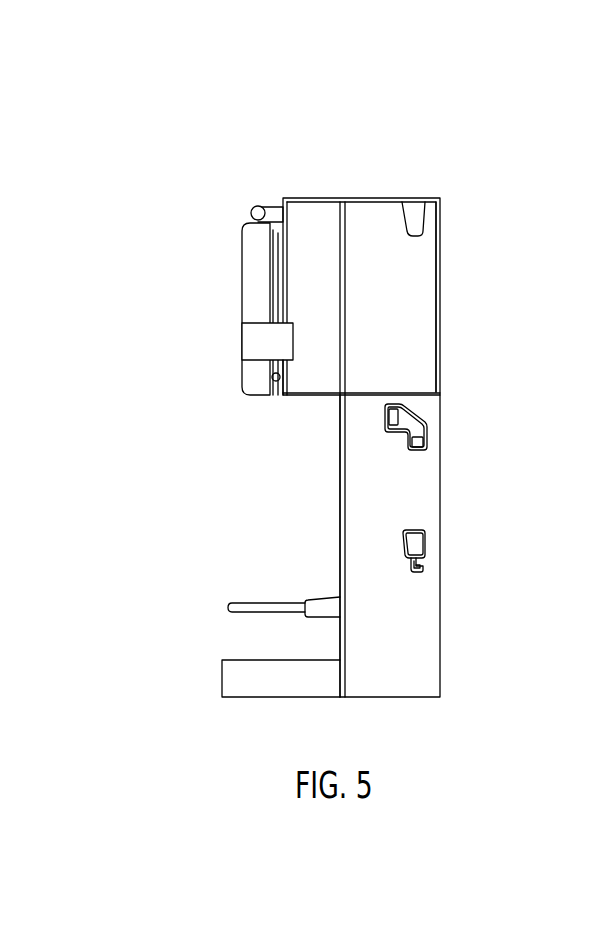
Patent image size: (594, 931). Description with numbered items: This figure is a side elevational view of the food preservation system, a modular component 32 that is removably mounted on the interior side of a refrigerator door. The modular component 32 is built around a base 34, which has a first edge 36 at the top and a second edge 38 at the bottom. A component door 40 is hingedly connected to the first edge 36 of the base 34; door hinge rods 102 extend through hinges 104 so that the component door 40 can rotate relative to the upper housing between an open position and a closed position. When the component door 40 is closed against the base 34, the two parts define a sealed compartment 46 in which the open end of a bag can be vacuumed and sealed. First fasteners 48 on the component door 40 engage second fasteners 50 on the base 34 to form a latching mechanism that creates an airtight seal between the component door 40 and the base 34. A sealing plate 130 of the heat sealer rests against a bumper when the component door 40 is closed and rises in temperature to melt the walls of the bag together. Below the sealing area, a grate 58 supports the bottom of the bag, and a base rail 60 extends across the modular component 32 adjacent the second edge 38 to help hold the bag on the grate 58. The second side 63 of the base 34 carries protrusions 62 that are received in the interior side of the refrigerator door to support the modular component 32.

The modular component 32 is at (180, 150).
The base 34 is at (384, 272).
The first edge 36 is at (292, 215).
The second edge 38 is at (355, 682).
The component door 40 is at (250, 265).
The sealed compartment 46 is at (316, 302).
The first fasteners 48 is at (250, 340).
The second fasteners 50 is at (285, 378).
The grate 58 is at (233, 660).
The base rail 60 is at (238, 603).
The protrusions 62 is at (425, 548).
The second side 63 is at (418, 358).
The door hinge rods 102 is at (252, 207).
The hinges 104 is at (258, 206).
The sealing plate 130 is at (277, 398).